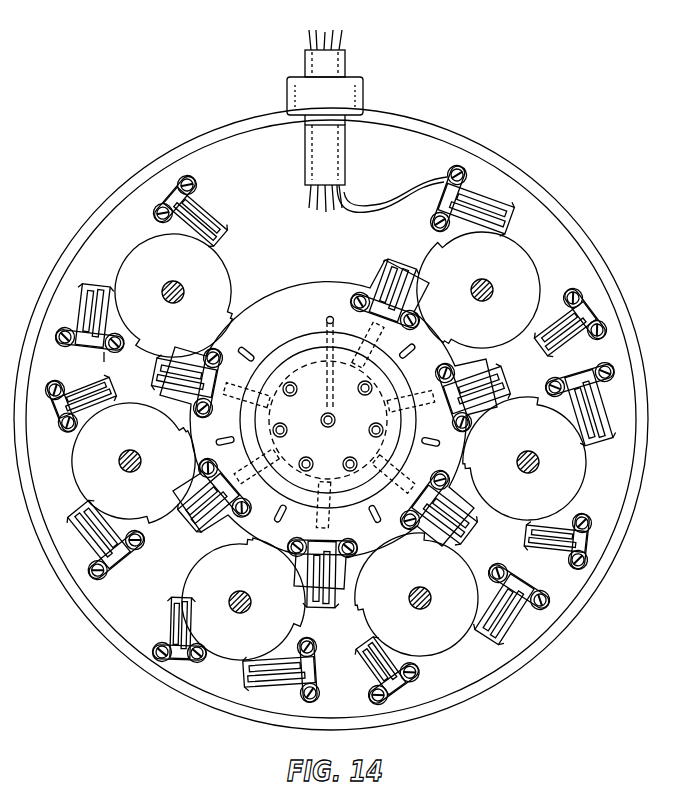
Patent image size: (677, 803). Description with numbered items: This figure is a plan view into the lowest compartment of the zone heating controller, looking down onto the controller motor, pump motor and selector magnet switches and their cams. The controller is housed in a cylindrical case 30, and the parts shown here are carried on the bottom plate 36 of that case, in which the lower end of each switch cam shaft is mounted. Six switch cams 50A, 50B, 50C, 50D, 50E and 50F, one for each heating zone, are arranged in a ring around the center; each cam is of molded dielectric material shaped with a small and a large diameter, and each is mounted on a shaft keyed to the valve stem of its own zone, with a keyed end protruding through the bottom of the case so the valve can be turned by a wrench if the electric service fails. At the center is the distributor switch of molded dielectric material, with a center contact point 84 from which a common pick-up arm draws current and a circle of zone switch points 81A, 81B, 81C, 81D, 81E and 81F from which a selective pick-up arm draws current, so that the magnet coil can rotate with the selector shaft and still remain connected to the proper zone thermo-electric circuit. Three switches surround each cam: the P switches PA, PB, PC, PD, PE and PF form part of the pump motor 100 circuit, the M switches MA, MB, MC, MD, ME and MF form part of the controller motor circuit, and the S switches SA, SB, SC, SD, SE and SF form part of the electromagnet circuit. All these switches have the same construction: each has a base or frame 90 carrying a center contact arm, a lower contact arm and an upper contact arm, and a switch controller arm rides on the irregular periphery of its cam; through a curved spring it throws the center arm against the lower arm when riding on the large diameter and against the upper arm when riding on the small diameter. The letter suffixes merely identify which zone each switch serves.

The cylindrical case 30 is at (636, 338).
The bottom plate 36 is at (227, 152).
The switch cam 50A is at (175, 297).
The switch cam 50B is at (135, 462).
The switch cam 50C is at (243, 598).
The switch cam 50D is at (416, 595).
The switch cam 50E is at (524, 458).
The switch cam 50F is at (477, 291).
The zone switch point 81A is at (294, 384).
The zone switch point 81B is at (283, 424).
The zone switch point 81C is at (314, 454).
The zone switch point 81D is at (351, 457).
The zone switch point 81E is at (378, 423).
The zone switch point 81F is at (362, 384).
The center contact point 84 is at (335, 420).
The switch base or frame 90 is at (105, 360).
The pump motor 100 is at (335, 322).
The pump motor switch PA is at (92, 317).
The pump motor switch PB is at (101, 535).
The pump motor switch PC is at (281, 672).
The pump motor switch PD is at (506, 608).
The pump motor switch PE is at (587, 406).
The pump motor switch PF is at (475, 208).
The controller motor switch MA is at (194, 216).
The controller motor switch MB is at (83, 398).
The controller motor switch MC is at (180, 630).
The controller motor switch MD is at (382, 667).
The controller motor switch ME is at (557, 539).
The controller motor switch MF is at (566, 328).
The selector magnet switch SA is at (185, 378).
The selector magnet switch SB is at (209, 501).
The selector magnet switch SC is at (321, 572).
The selector magnet switch SD is at (443, 514).
The selector magnet switch SE is at (475, 390).
The selector magnet switch SF is at (392, 292).